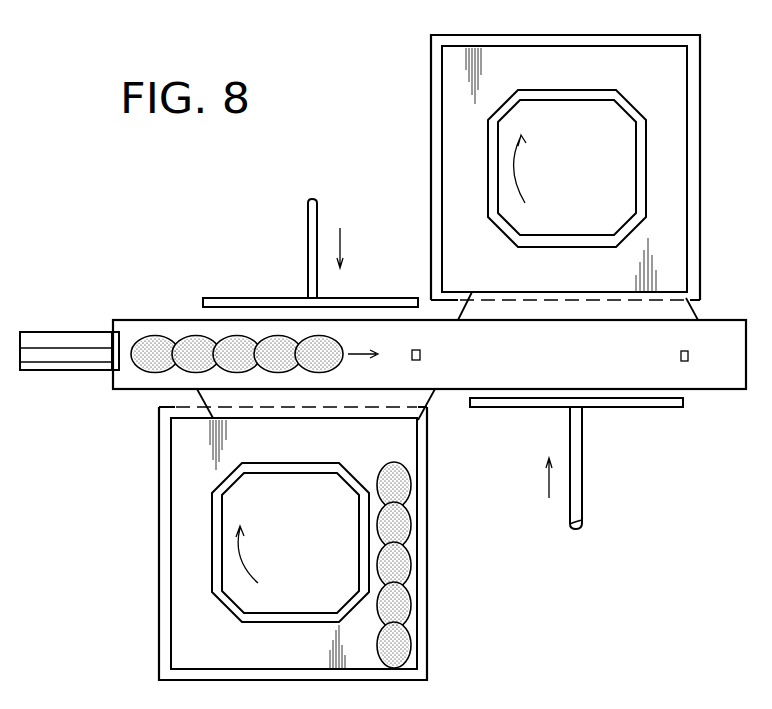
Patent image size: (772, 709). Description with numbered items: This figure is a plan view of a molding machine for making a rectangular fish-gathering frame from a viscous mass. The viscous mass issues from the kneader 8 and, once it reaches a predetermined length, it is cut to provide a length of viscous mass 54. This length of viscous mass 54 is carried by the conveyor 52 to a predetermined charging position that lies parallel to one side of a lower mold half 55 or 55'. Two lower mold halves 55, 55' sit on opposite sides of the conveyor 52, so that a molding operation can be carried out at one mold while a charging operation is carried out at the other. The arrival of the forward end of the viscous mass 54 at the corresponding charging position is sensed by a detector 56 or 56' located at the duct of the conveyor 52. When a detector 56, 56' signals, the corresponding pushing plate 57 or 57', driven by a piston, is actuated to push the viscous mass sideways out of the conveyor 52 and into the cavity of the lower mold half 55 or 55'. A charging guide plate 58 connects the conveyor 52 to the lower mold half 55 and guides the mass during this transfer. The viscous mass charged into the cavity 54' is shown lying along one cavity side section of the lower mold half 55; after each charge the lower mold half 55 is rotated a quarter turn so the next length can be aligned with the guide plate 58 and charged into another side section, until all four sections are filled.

The kneader 8 is at (67, 345).
The conveyor 52 is at (140, 320).
The length of viscous mass 54 is at (237, 330).
The viscous mass charged into the cavity 54' is at (425, 565).
The lower mold half 55 is at (272, 534).
The lower mold half 55' is at (540, 177).
The detector 56 is at (435, 361).
The detector 56' is at (710, 361).
The pushing plate 57 is at (310, 246).
The pushing plate 57' is at (576, 463).
The charging guide plate 58 is at (425, 400).